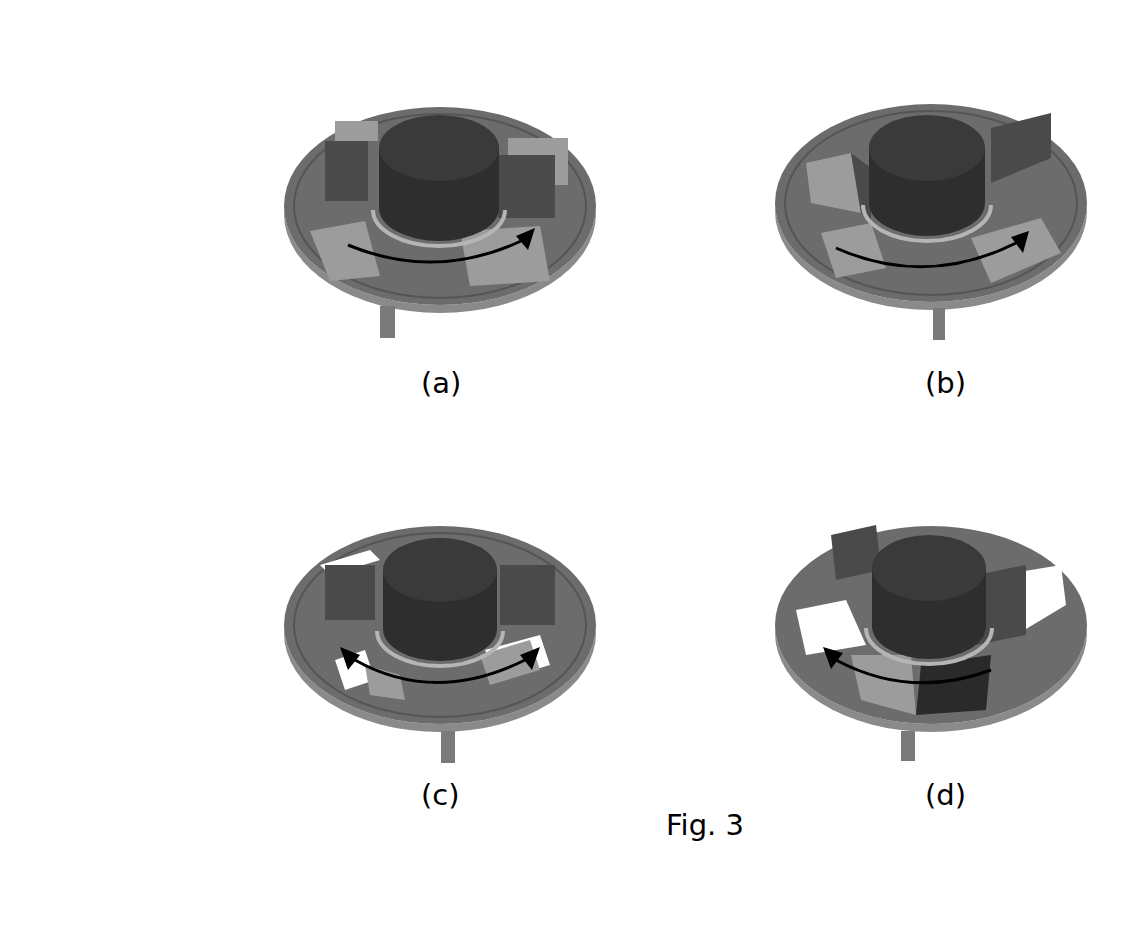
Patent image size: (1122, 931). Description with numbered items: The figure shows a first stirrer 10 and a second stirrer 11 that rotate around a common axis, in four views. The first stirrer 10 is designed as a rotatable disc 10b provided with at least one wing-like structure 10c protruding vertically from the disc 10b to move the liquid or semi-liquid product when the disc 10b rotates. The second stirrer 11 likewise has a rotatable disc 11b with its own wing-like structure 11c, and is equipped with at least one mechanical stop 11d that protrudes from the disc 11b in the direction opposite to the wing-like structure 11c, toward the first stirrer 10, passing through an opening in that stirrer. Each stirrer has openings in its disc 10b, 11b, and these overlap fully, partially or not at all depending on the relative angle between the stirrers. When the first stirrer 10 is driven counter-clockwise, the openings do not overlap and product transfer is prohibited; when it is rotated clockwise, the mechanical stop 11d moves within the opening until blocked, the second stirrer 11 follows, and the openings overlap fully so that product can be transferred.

The first stirrer 10 is at (463, 102).
The rotatable disc 10b is at (297, 167).
The wing-like structure 10c is at (340, 143).
The second stirrer 11 is at (400, 219).
The rotatable disc 11b is at (480, 303).
The wing-like structure 11c is at (380, 308).
The mechanical stop 11d is at (845, 250).